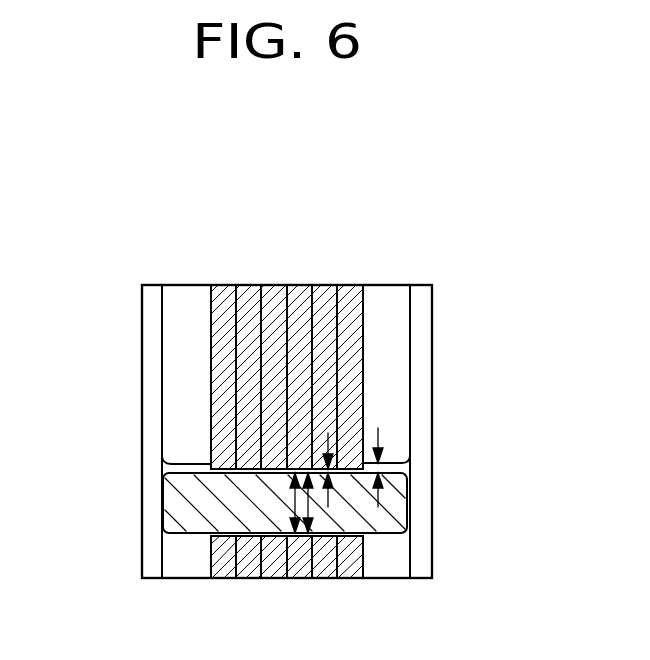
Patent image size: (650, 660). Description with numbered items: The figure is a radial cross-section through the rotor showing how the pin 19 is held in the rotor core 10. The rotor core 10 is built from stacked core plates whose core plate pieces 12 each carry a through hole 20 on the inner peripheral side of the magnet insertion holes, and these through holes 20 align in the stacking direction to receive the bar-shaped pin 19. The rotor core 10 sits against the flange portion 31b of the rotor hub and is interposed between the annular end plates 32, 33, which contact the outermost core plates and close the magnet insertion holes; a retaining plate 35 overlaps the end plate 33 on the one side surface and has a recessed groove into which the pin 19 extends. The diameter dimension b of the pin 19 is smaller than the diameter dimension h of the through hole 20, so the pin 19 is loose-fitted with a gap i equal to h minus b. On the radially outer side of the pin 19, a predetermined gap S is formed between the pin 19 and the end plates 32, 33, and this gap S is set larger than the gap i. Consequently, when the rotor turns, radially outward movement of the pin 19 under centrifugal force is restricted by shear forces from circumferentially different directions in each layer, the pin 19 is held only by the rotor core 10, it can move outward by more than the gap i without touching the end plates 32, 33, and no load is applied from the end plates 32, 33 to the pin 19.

The rotor core 10 is at (279, 260).
The core plate piece 12 is at (273, 287).
The pin 19 is at (405, 503).
The through hole 20 is at (353, 527).
The flange portion 31b is at (150, 448).
The end plate 32 is at (180, 287).
The end plate 33 is at (388, 287).
The retaining plate 35 is at (418, 388).
The diameter dimension of pin b is at (294, 503).
The diameter dimension of through hole h is at (306, 504).
The gap of loose fit i is at (352, 463).
The predetermined gap S is at (394, 448).